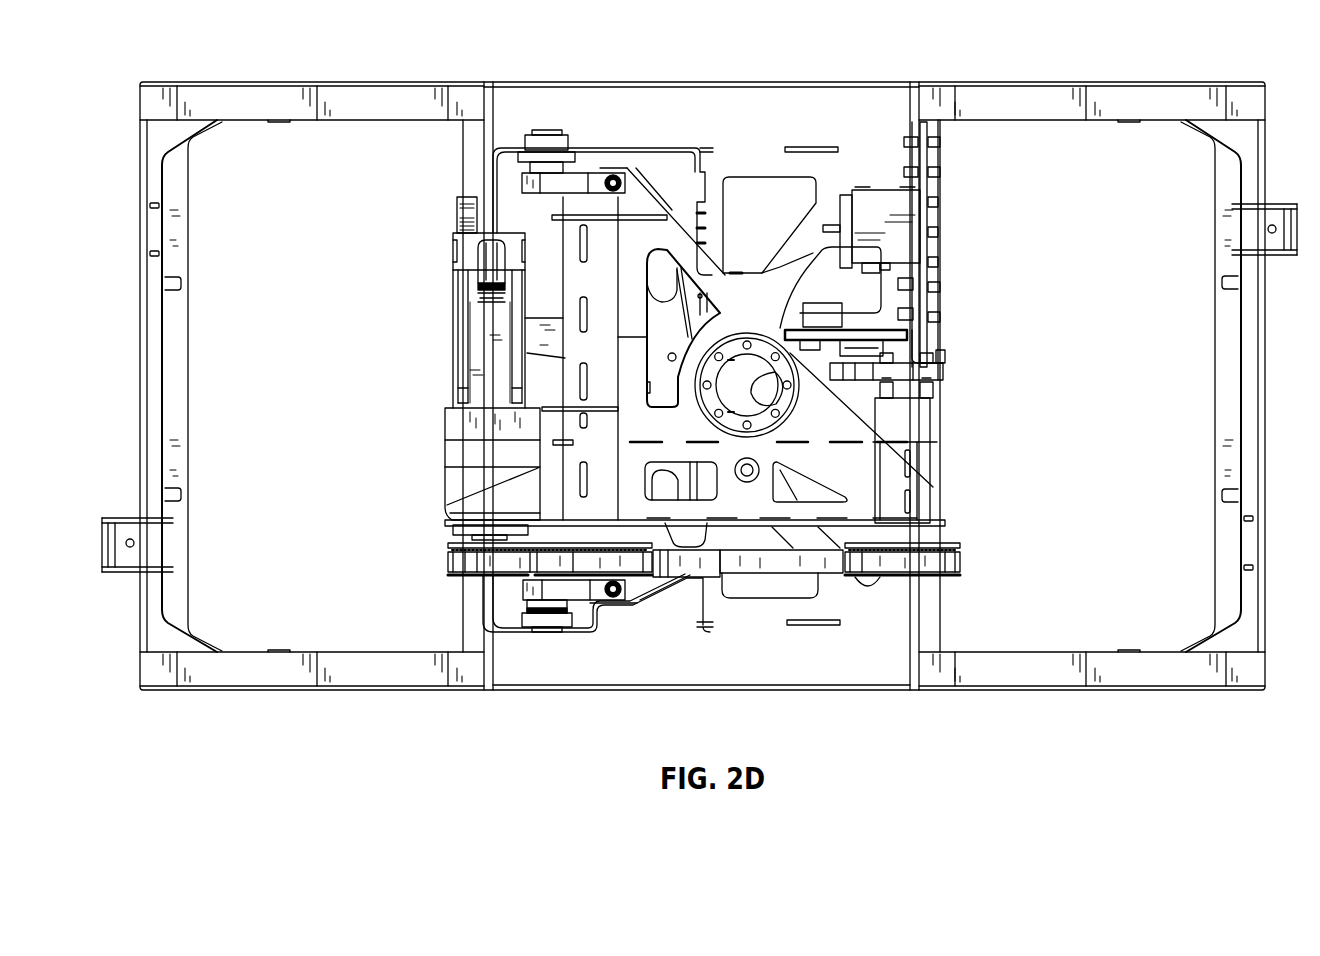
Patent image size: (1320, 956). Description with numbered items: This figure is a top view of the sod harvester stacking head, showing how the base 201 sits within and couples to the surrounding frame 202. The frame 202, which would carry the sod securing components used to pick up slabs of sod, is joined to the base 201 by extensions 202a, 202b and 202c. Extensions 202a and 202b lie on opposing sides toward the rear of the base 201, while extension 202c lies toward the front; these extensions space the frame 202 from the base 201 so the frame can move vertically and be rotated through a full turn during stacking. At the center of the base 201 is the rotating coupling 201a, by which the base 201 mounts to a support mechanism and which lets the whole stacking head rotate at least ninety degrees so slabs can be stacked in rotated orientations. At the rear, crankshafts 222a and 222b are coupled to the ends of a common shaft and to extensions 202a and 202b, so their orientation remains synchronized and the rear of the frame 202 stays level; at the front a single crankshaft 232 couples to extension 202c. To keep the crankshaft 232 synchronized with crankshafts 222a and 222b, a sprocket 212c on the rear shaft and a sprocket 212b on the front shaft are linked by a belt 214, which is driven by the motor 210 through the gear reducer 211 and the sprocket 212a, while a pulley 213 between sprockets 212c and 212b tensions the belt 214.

The base 201 is at (958, 412).
The rotating coupling 201a is at (810, 395).
The frame 202 is at (182, 701).
The extension 202a is at (512, 634).
The extension 202b is at (648, 148).
The extension 202c is at (895, 332).
The motor 210 is at (453, 312).
The gear reducer 211 is at (445, 480).
The sprocket 212a is at (447, 544).
The sprocket 212b is at (946, 543).
The sprocket 212c is at (583, 533).
The pulley 213 is at (700, 573).
The belt 214 is at (777, 566).
The crankshaft 222a is at (523, 586).
The crankshaft 222b is at (521, 185).
The crankshaft 232 is at (940, 350).